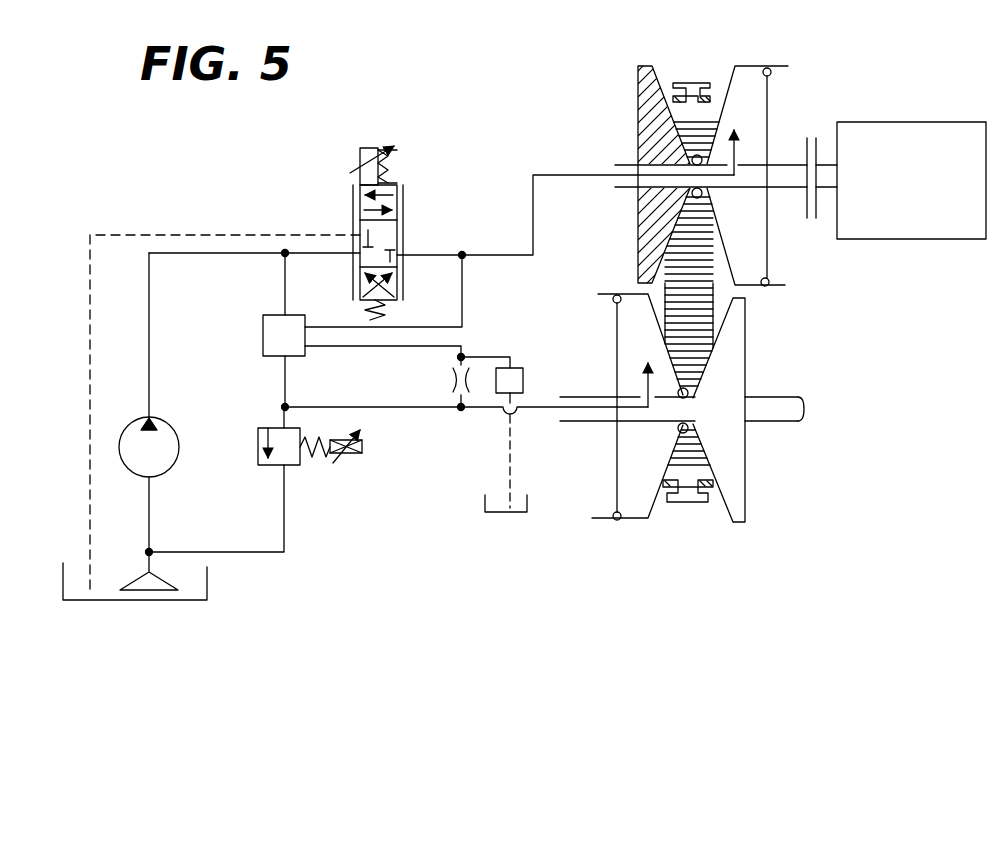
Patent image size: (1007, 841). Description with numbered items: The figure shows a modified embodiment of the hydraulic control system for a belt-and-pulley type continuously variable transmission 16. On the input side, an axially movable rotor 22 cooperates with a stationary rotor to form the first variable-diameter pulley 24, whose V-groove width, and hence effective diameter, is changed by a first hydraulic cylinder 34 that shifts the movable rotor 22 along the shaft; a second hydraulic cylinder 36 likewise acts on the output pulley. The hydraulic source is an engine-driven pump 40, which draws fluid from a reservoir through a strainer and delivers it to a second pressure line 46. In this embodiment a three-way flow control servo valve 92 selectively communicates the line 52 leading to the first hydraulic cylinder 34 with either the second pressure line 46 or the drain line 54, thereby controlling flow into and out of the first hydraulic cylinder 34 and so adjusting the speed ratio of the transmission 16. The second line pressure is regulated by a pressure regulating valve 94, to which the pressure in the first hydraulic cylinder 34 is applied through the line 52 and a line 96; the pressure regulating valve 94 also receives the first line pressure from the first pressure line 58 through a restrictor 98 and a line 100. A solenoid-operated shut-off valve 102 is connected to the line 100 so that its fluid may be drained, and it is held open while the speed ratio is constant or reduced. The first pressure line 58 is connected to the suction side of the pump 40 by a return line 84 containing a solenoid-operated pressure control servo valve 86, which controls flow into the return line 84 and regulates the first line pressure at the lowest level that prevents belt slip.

The continuously variable transmission 16 is at (767, 270).
The axially movable rotor 22 is at (752, 66).
The first variable-diameter pulley 24 is at (630, 90).
The first hydraulic cylinder 34 is at (758, 94).
The second hydraulic cylinder 36 is at (620, 488).
The pump 40 is at (165, 428).
The second pressure line 46 is at (230, 258).
The line 52 is at (566, 175).
The drain conduit 54 is at (240, 233).
The first pressure line 58 is at (350, 405).
The return line 84 is at (232, 552).
The pressure control servo valve 86 is at (300, 478).
The three-way flow control servo valve 92 is at (352, 208).
The pressure regulating valve 94 is at (263, 328).
The line 96 is at (462, 306).
The restrictor 98 is at (453, 385).
The line 100 is at (345, 348).
The solenoid-operated shut-off valve 102 is at (520, 380).